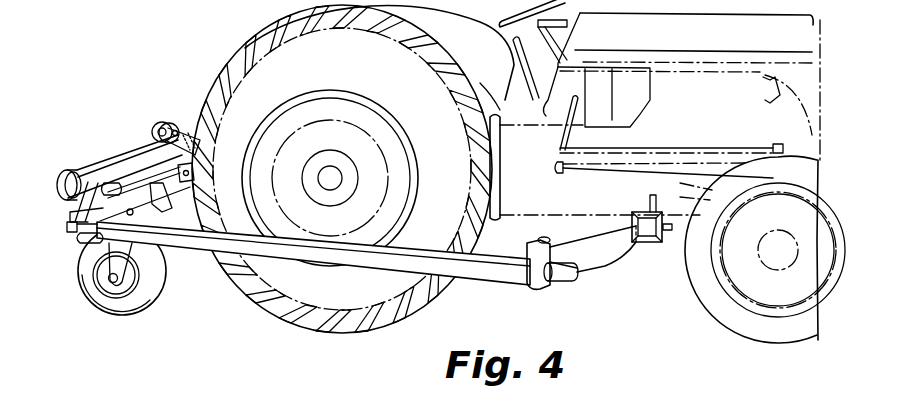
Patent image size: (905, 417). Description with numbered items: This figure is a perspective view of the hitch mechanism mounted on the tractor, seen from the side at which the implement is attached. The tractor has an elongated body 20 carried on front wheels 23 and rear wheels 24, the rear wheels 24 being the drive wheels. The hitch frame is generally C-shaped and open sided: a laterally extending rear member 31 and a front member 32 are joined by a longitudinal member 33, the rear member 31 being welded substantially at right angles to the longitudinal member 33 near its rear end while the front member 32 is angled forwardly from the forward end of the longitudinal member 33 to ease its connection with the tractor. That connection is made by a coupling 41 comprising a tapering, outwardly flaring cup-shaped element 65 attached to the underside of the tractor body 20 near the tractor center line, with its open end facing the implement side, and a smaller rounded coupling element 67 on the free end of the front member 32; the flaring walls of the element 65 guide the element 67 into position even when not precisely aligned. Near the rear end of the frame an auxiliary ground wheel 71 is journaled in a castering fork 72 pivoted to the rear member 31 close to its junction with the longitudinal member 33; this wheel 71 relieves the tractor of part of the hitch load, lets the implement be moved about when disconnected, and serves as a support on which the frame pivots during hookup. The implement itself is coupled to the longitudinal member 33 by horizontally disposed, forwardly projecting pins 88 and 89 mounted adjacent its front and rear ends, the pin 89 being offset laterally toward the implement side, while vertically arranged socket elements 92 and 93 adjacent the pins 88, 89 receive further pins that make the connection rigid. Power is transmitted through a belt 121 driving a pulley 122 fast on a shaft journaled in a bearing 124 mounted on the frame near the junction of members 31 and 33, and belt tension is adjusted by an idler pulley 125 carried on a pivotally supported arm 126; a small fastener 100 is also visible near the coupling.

The elongated body 20 is at (557, 208).
The front wheels 23 is at (765, 341).
The rear wheels 24 is at (298, 325).
The rear member 31 is at (163, 204).
The front member 32 is at (598, 258).
The longitudinal member 33 is at (302, 243).
The coupling 41 is at (658, 253).
The cup-shaped element 65 is at (640, 215).
The coupling element 67 is at (650, 225).
The ground wheel 71 is at (158, 297).
The castering fork 72 is at (113, 278).
The pin 88 is at (572, 282).
The pin 89 is at (80, 238).
The socket element 92 is at (538, 250).
The socket element 93 is at (67, 224).
The bolt 100 is at (667, 228).
The belt 121 is at (127, 152).
The pulley 122 is at (60, 175).
The bearing 124 is at (110, 183).
The idler pulley 125 is at (158, 125).
The arm 126 is at (175, 128).